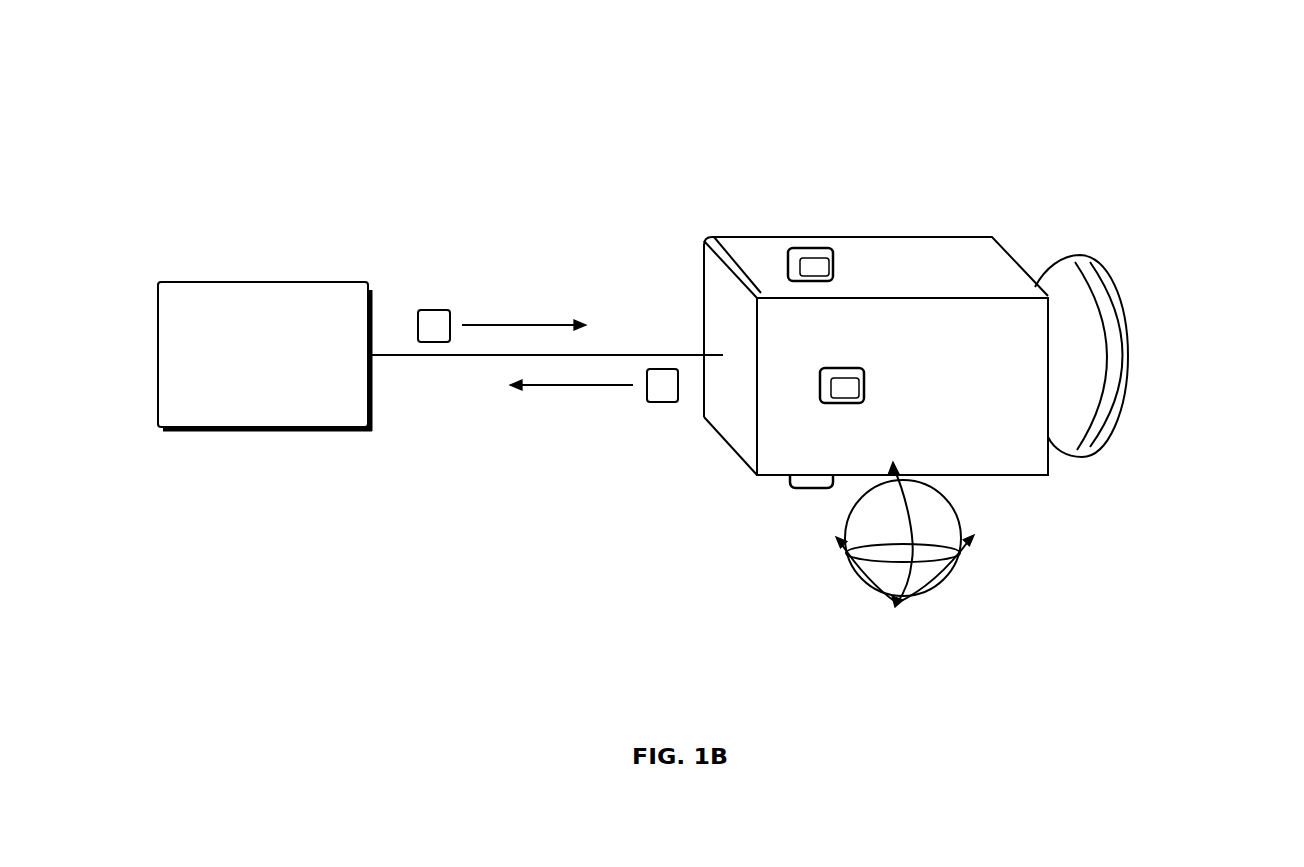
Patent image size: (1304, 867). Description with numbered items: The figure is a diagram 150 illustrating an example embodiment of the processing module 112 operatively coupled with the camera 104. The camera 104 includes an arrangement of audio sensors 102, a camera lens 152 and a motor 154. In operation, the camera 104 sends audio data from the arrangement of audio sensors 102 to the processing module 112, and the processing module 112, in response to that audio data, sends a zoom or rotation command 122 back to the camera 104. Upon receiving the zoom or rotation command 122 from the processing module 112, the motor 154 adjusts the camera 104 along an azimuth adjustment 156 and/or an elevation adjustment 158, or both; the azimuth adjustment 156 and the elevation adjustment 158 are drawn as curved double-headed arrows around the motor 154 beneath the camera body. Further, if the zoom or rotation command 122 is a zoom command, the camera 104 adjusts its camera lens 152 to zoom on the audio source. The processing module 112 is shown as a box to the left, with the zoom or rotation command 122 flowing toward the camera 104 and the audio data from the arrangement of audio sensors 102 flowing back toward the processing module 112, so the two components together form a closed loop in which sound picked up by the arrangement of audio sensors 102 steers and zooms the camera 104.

The diagram 150 is at (255, 81).
The arrangement of audio sensors 102 is at (835, 478).
The camera 104 is at (704, 275).
The camera lens 152 is at (1128, 300).
The processing module 112 is at (247, 403).
The zoom or rotation command 122 is at (433, 310).
The azimuth adjustment 156 is at (893, 470).
The motor 154 is at (912, 588).
The elevation adjustment 158 is at (912, 563).